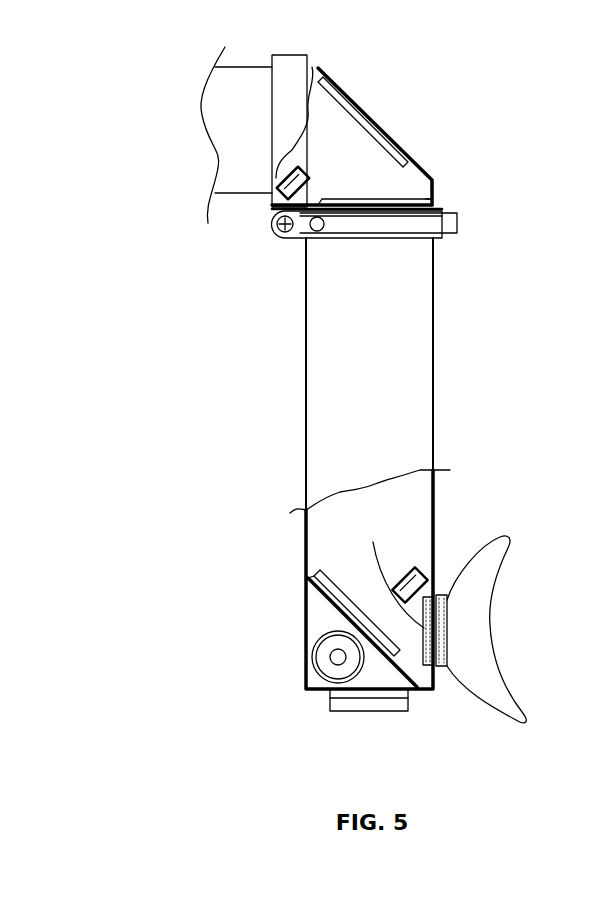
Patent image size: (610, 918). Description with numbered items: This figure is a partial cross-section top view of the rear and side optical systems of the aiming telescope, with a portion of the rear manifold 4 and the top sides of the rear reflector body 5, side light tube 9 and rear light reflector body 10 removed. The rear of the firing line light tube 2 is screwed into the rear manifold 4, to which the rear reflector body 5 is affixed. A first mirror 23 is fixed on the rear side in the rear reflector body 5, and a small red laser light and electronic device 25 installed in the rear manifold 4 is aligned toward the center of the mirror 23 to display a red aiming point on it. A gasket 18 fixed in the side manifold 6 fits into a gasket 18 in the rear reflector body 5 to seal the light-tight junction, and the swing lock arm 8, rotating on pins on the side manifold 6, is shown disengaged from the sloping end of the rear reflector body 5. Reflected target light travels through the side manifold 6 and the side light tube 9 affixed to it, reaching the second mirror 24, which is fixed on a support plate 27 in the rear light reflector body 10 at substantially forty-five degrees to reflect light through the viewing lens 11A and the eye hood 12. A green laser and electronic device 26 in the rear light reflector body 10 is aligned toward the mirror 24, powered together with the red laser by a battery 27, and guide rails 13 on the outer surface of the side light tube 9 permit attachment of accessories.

The firing line light tube 2 is at (244, 64).
The rear manifold 4 is at (291, 53).
The rear reflector body 5 is at (318, 66).
The first mirror 23 is at (380, 119).
The gasket 18 is at (431, 199).
The swing lock arm 8 is at (462, 221).
The side manifold 6 is at (414, 240).
The red laser light and electronic device 25 is at (270, 175).
The side light tube 9 is at (420, 400).
The green laser and electronic device 26 is at (427, 562).
The viewing lens 11A is at (387, 567).
The second mirror 24 is at (352, 600).
The support plate 27 is at (304, 598).
The rear light reflector body 10 is at (303, 625).
The eye hood 12 is at (492, 595).
The guide rails 13 is at (346, 713).